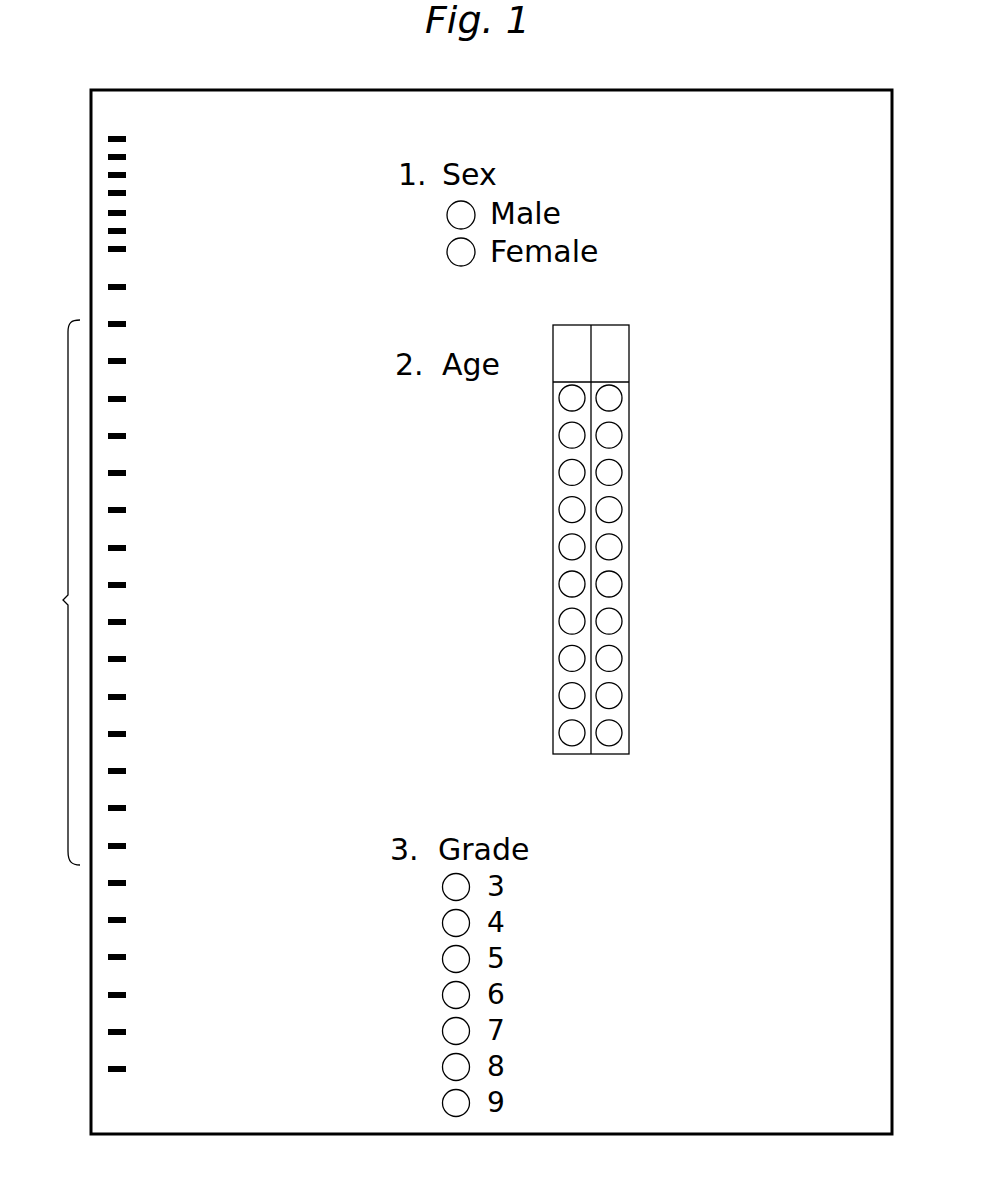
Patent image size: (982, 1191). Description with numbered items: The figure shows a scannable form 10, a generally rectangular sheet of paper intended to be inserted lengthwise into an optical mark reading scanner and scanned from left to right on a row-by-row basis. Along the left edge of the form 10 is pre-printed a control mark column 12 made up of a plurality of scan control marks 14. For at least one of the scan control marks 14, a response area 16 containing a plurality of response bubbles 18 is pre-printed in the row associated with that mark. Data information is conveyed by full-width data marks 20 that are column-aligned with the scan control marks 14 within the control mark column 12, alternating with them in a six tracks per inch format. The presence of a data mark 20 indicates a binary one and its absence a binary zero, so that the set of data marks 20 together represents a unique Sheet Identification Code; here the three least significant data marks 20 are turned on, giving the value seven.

The scannable form 10 is at (500, 1136).
The control mark column 12 is at (56, 592).
The scan control marks 14 is at (126, 139).
The response area 16 is at (629, 532).
The response bubbles 18 is at (448, 248).
The full-width data marks 20 is at (108, 157).